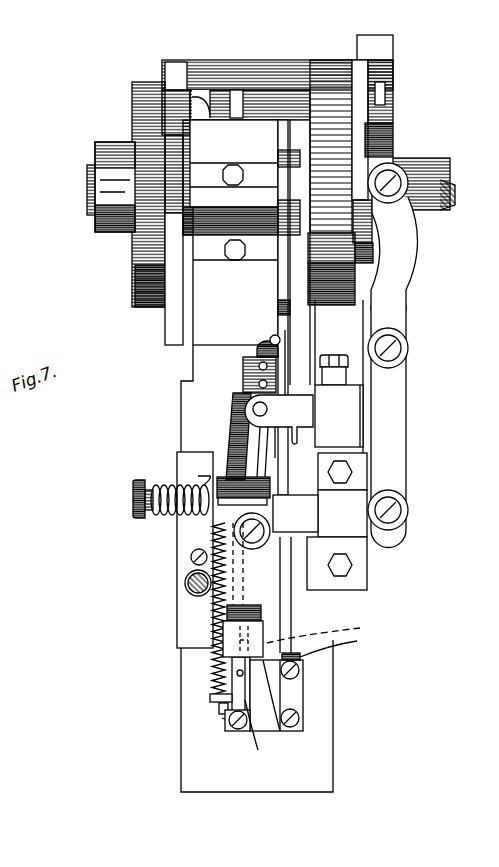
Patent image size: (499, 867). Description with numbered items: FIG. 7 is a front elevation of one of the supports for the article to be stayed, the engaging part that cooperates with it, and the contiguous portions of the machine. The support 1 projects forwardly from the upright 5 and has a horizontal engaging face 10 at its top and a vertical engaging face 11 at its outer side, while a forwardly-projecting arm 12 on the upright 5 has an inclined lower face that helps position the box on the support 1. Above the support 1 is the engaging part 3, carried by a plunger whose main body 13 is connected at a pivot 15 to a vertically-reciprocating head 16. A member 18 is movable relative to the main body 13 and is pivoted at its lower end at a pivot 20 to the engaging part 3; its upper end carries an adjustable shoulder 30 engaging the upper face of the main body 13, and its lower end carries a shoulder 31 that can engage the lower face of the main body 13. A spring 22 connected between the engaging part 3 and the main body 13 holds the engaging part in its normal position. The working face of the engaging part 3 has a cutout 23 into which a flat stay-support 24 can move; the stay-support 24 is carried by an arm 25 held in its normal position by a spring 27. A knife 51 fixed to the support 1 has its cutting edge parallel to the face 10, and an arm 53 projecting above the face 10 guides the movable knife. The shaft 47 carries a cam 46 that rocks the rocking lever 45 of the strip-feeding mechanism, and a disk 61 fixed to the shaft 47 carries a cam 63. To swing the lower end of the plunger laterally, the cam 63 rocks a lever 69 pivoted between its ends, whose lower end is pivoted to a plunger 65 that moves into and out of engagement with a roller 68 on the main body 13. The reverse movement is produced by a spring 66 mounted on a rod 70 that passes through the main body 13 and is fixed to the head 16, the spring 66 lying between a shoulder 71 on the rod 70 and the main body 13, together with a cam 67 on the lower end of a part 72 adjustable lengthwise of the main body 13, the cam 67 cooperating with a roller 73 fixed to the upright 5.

The support 1 is at (270, 693).
The engaging part 3 is at (227, 697).
The upright 5 is at (318, 737).
The engaging face 10 is at (305, 688).
The engaging face 11 is at (247, 731).
The forwardly-projecting arm 12 is at (339, 645).
The main body 13 is at (223, 482).
The pivot 15 is at (235, 407).
The vertically-reciprocating head 16 is at (302, 425).
The member 18 is at (255, 350).
The pivot 20 is at (240, 673).
The spring 22 is at (233, 621).
The cutout 23 is at (258, 750).
The stay-support 24 is at (280, 735).
The arm 25 is at (220, 722).
The spring 27 is at (222, 703).
The adjustable shoulder 30 is at (247, 380).
The shoulder 31 is at (238, 638).
The rocking lever 45 is at (372, 48).
The cam 46 is at (95, 155).
The shaft 47 is at (447, 160).
The knife 51 is at (305, 662).
The arm 53 is at (327, 627).
The disk 61 is at (335, 223).
The cam 63 is at (397, 143).
The plunger 65 is at (305, 518).
The spring 66 is at (178, 515).
The cam 67 is at (188, 585).
The roller 68 is at (267, 538).
The lever 69 is at (383, 398).
The rod 70 is at (213, 490).
The shoulder 71 is at (135, 498).
The part 72 is at (217, 535).
The roller 73 is at (190, 566).